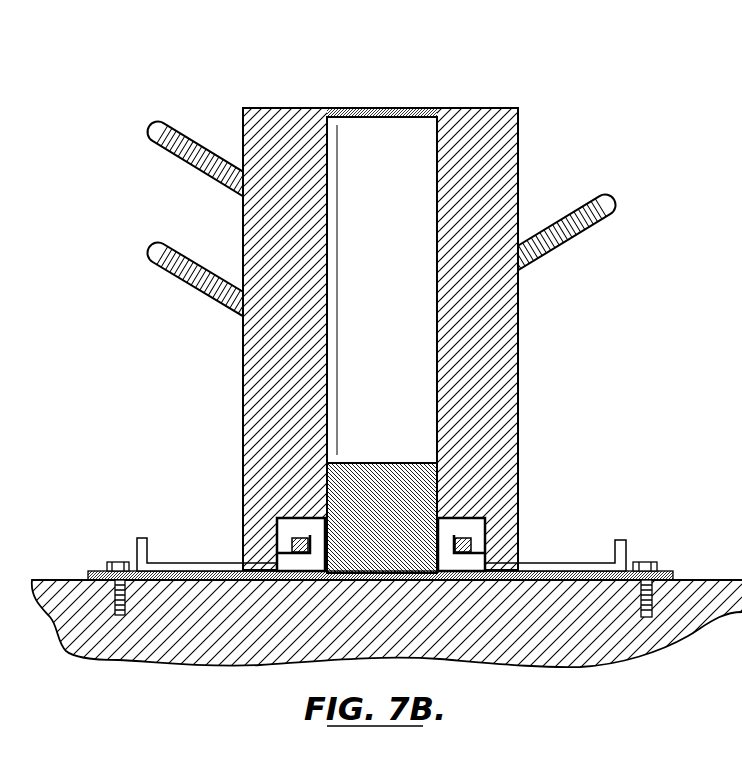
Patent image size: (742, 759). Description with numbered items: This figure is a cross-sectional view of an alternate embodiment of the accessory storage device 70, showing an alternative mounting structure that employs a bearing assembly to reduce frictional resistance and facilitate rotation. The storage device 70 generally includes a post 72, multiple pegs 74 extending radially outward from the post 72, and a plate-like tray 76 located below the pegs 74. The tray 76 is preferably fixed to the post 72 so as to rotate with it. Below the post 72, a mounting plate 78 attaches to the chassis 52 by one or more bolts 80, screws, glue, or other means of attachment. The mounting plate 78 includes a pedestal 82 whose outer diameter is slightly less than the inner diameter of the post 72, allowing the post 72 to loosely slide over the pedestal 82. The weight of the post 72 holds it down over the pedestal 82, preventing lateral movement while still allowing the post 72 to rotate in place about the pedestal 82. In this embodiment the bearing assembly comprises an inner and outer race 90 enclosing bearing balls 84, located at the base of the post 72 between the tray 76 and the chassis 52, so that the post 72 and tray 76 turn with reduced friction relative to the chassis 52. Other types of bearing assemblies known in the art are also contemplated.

The chassis 52 is at (442, 620).
The storage device 70 is at (608, 125).
The post 72 is at (375, 108).
The pegs 74 is at (153, 128).
The tray 76 is at (141, 538).
The mounting plate 78 is at (582, 577).
The bolts 80 is at (661, 574).
The pedestal 82 is at (385, 463).
The bearing balls 84 is at (300, 560).
The inner and outer race 90 is at (286, 526).